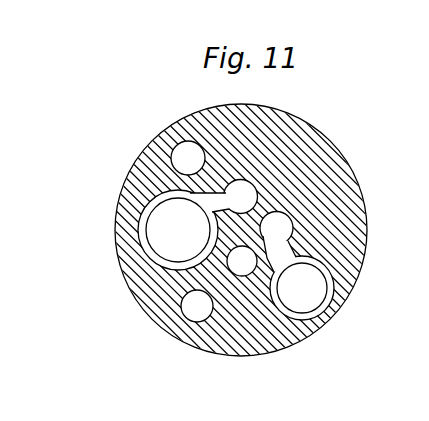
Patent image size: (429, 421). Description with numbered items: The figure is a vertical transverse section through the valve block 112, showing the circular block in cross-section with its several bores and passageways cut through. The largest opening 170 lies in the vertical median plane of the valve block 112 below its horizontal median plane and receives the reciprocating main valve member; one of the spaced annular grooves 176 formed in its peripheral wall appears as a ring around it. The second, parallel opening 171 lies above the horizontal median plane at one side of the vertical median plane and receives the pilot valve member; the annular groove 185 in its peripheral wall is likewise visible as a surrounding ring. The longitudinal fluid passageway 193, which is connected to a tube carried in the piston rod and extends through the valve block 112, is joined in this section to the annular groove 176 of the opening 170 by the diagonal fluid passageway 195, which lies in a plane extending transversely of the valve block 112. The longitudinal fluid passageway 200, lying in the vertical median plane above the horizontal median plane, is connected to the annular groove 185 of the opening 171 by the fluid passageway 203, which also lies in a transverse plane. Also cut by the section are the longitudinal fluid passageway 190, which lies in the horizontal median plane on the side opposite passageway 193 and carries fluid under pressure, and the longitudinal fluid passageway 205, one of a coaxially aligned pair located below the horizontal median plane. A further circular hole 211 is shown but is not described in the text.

The valve block 112 is at (312, 146).
The opening 170 is at (170, 247).
The opening 171 is at (313, 288).
The annular groove 176 is at (138, 228).
The annular groove 185 is at (318, 311).
The fluid passageway 190 is at (240, 268).
The fluid passageway 193 is at (236, 180).
The diagonal fluid passageway 195 is at (160, 193).
The fluid passageway 200 is at (291, 216).
The fluid passageway 203 is at (292, 243).
The fluid passageway 205 is at (185, 304).
The port 211 is at (182, 152).